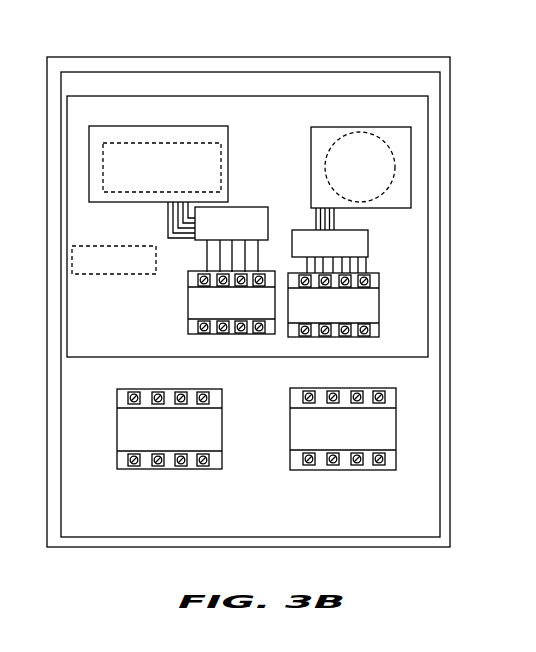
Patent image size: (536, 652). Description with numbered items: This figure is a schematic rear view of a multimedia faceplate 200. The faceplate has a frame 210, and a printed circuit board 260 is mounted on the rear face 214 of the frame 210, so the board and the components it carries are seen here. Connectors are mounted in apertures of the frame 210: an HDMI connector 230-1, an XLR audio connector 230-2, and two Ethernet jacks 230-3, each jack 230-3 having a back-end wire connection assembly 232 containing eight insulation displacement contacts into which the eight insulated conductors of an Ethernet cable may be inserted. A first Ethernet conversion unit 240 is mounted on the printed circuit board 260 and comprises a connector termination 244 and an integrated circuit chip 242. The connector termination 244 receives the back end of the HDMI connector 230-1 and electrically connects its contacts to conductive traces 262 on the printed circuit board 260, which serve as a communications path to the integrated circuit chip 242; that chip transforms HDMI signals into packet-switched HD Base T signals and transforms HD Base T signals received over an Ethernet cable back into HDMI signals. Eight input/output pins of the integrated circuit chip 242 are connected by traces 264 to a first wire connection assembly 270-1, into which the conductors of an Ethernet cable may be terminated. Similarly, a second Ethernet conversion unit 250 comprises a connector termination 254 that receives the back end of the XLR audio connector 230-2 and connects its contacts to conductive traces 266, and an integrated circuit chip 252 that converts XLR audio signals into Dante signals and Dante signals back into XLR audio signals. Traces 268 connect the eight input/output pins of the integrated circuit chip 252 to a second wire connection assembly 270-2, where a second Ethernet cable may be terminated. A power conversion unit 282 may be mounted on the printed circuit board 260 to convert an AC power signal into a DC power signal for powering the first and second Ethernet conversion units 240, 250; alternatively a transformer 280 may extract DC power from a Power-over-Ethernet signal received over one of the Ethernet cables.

The multimedia faceplate 200 is at (270, 38).
The frame 210 is at (153, 56).
The rear face 214 is at (117, 88).
The printed circuit board 260 is at (88, 357).
The first Ethernet conversion unit 240 is at (182, 171).
The connector termination 244 is at (117, 126).
The HDMI connector 230-1 is at (162, 167).
The conductive traces 262 is at (166, 206).
The integrated circuit chip 242 is at (231, 223).
The traces 264 is at (202, 258).
The first wire connection assembly 270-1 is at (231, 302).
The transformer 280 is at (114, 260).
The power conversion unit 282 is at (114, 260).
The second Ethernet conversion unit 250 is at (347, 178).
The connector termination 254 is at (387, 127).
The XLR audio connector 230-2 is at (360, 167).
The conductive traces 266 is at (316, 218).
The integrated circuit chip 252 is at (330, 243).
The traces 268 is at (368, 265).
The second wire connection assembly 270-2 is at (333, 305).
The RJ-45 jack 230-3 is at (267, 435).
The back-end wire connection assembly 232 is at (130, 456).